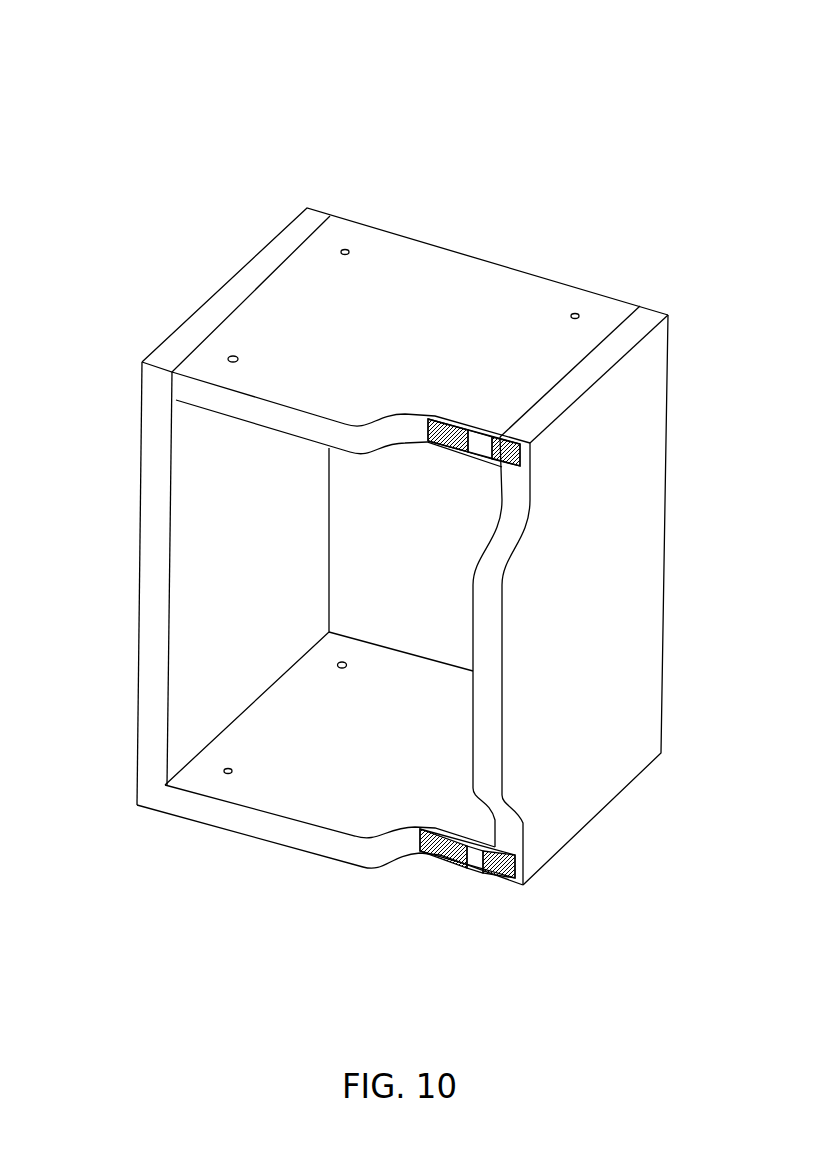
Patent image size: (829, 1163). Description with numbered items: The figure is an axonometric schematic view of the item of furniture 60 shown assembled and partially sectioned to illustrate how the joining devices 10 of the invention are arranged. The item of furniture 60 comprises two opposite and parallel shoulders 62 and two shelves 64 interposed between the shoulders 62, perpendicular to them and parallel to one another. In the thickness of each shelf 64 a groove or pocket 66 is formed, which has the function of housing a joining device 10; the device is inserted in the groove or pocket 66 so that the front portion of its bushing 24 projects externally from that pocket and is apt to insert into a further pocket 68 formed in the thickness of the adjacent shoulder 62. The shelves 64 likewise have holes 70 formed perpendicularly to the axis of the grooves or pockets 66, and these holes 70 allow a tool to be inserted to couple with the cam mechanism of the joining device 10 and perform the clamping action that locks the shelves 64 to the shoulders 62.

The joining device 10 is at (553, 705).
The bushing 24 is at (522, 462).
The item of furniture 60 is at (617, 135).
The shoulder 62 is at (188, 560).
The shelf 64 is at (445, 312).
The groove or pocket 66 is at (438, 447).
The further pocket 68 is at (528, 468).
The hole 70 is at (348, 250).